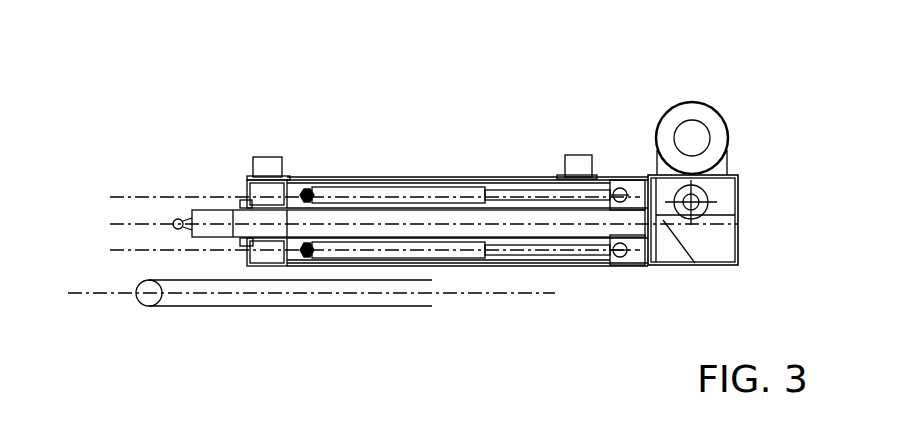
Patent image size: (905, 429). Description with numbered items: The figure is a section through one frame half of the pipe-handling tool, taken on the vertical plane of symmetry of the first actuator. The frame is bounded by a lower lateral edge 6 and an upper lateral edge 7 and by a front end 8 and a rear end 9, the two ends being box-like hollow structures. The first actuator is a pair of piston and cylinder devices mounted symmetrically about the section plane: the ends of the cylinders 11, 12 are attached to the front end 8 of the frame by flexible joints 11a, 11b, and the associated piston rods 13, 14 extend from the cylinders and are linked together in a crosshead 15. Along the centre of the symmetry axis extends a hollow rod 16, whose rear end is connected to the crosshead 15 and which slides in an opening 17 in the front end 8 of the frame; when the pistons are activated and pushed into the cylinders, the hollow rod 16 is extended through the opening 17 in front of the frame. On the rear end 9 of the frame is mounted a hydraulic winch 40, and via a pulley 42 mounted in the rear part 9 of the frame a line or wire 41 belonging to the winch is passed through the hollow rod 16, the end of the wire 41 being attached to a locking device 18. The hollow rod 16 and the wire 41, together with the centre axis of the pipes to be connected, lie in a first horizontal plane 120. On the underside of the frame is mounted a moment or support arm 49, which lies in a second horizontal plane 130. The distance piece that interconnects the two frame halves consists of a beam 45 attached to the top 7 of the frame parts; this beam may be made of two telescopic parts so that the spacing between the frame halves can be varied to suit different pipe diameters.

The lower lateral edge 6 is at (565, 266).
The upper lateral edge 7 is at (532, 177).
The front end 8 is at (243, 185).
The rear end 9 is at (738, 252).
The cylinder 11 is at (398, 187).
The flexible joint 11a is at (308, 190).
The flexible joint 11b is at (302, 259).
The cylinder 12 is at (405, 259).
The piston rod 13 is at (503, 189).
The piston rod 14 is at (505, 266).
The crosshead 15 is at (640, 178).
The hollow rod 16 is at (590, 230).
The opening 17 is at (272, 242).
The locking device 18 is at (176, 219).
The hydraulic winch 40 is at (680, 104).
The wire 41 is at (695, 264).
The pulley 42 is at (738, 200).
The beam 45 is at (265, 156).
The moment arm 49 is at (190, 306).
The first horizontal plane 120 is at (118, 223).
The second horizontal plane 130 is at (73, 295).